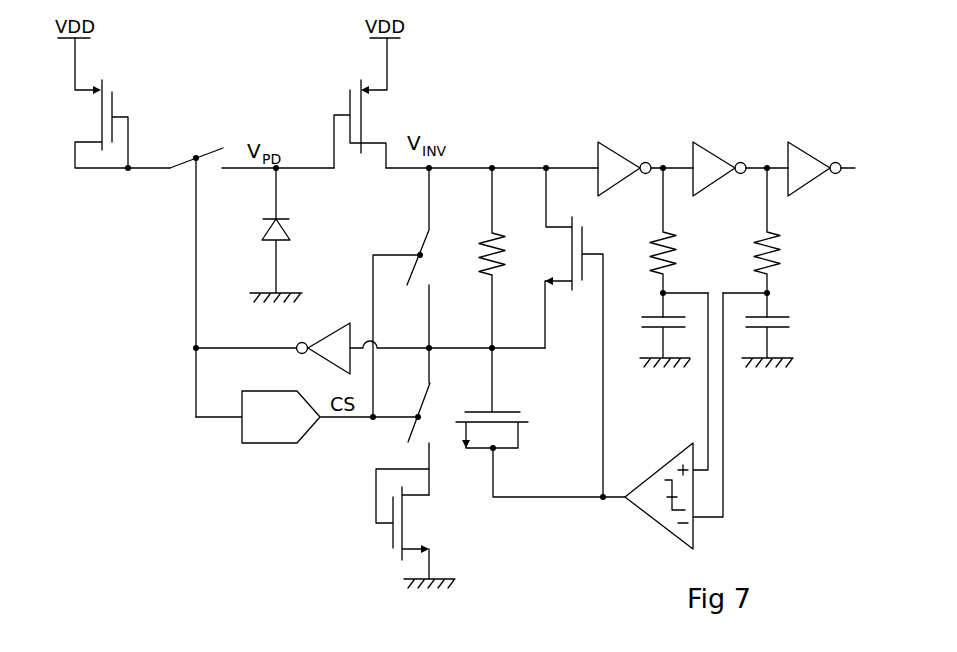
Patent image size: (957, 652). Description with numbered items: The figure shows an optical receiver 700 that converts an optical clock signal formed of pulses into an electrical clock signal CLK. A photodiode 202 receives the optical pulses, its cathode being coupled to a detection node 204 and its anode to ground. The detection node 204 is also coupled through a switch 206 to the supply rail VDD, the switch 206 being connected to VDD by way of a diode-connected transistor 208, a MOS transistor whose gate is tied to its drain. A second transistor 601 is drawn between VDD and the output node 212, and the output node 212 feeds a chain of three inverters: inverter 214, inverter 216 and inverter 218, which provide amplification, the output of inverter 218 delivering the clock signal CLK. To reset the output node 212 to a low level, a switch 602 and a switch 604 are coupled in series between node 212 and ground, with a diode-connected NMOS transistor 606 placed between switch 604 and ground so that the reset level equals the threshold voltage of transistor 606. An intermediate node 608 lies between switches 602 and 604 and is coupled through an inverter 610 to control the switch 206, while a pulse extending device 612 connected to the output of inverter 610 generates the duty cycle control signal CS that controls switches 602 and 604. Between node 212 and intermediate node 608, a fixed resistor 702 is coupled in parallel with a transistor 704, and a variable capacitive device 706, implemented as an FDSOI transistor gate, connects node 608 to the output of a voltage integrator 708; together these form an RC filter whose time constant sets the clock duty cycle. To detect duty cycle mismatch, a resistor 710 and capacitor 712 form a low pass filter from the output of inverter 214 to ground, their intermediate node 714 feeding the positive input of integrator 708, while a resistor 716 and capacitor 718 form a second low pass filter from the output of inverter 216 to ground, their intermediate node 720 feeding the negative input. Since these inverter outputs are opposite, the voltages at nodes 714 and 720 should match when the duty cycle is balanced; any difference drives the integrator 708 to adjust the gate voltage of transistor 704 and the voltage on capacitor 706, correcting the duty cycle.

The optical receiver 700 is at (722, 63).
The diode-connected transistor 208 is at (124, 106).
The switch 206 is at (211, 147).
The detection node 204 is at (275, 171).
The photodiode 202 is at (291, 226).
The pull-up transistor 601 is at (376, 116).
The output node 212 is at (431, 170).
The switch 602 is at (423, 251).
The intermediate node 608 is at (432, 346).
The inverter 610 is at (327, 341).
The pulse extending device 612 is at (268, 436).
The switch 604 is at (430, 418).
The diode-connected NMOS transistor 606 is at (410, 523).
The resistor 702 is at (507, 241).
The transistor 704 is at (588, 240).
The variable capacitive device 706 is at (527, 437).
The voltage integrator 708 is at (665, 470).
The inverter 214 is at (613, 160).
The inverter 216 is at (708, 160).
The inverter 218 is at (805, 158).
The resistor 710 is at (675, 243).
The intermediate node 714 is at (665, 292).
The capacitor 712 is at (656, 328).
The resistor 716 is at (779, 245).
The intermediate node 720 is at (769, 292).
The capacitor 718 is at (788, 322).